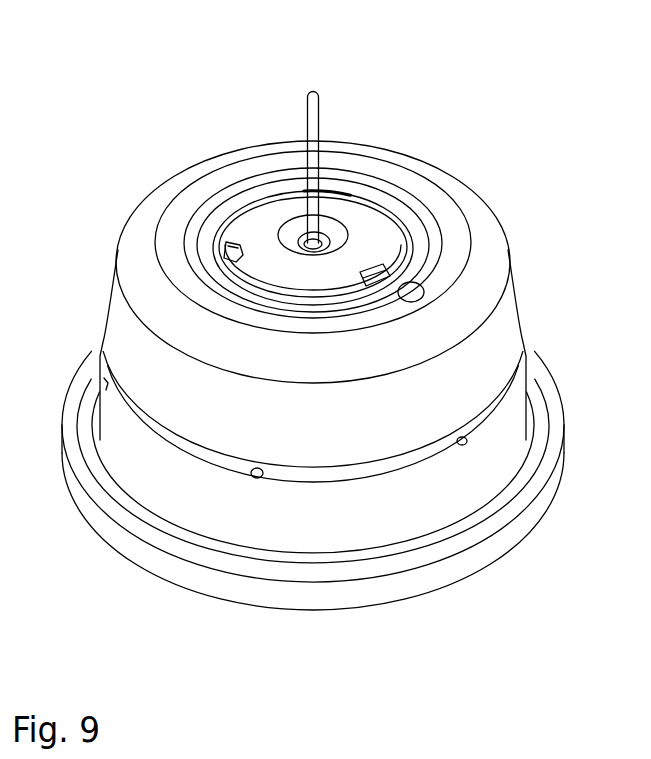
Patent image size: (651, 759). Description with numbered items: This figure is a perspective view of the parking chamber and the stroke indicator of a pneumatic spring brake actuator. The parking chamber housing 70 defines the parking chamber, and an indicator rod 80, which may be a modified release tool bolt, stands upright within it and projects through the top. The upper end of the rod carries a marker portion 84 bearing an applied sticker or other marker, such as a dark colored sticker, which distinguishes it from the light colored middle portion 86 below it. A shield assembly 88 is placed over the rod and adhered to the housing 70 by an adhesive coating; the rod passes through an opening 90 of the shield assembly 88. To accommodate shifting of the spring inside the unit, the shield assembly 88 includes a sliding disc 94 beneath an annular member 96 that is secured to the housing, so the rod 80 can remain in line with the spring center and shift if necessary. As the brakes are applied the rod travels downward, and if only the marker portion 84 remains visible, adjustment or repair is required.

The indicator rod 80 is at (333, 58).
The parking chamber housing 70 is at (140, 213).
The marker portion 84 is at (307, 118).
The middle portion 86 is at (340, 205).
The shield assembly 88 is at (255, 185).
The opening 90 is at (322, 237).
The sliding disc 94 is at (330, 230).
The annular member 96 is at (263, 245).